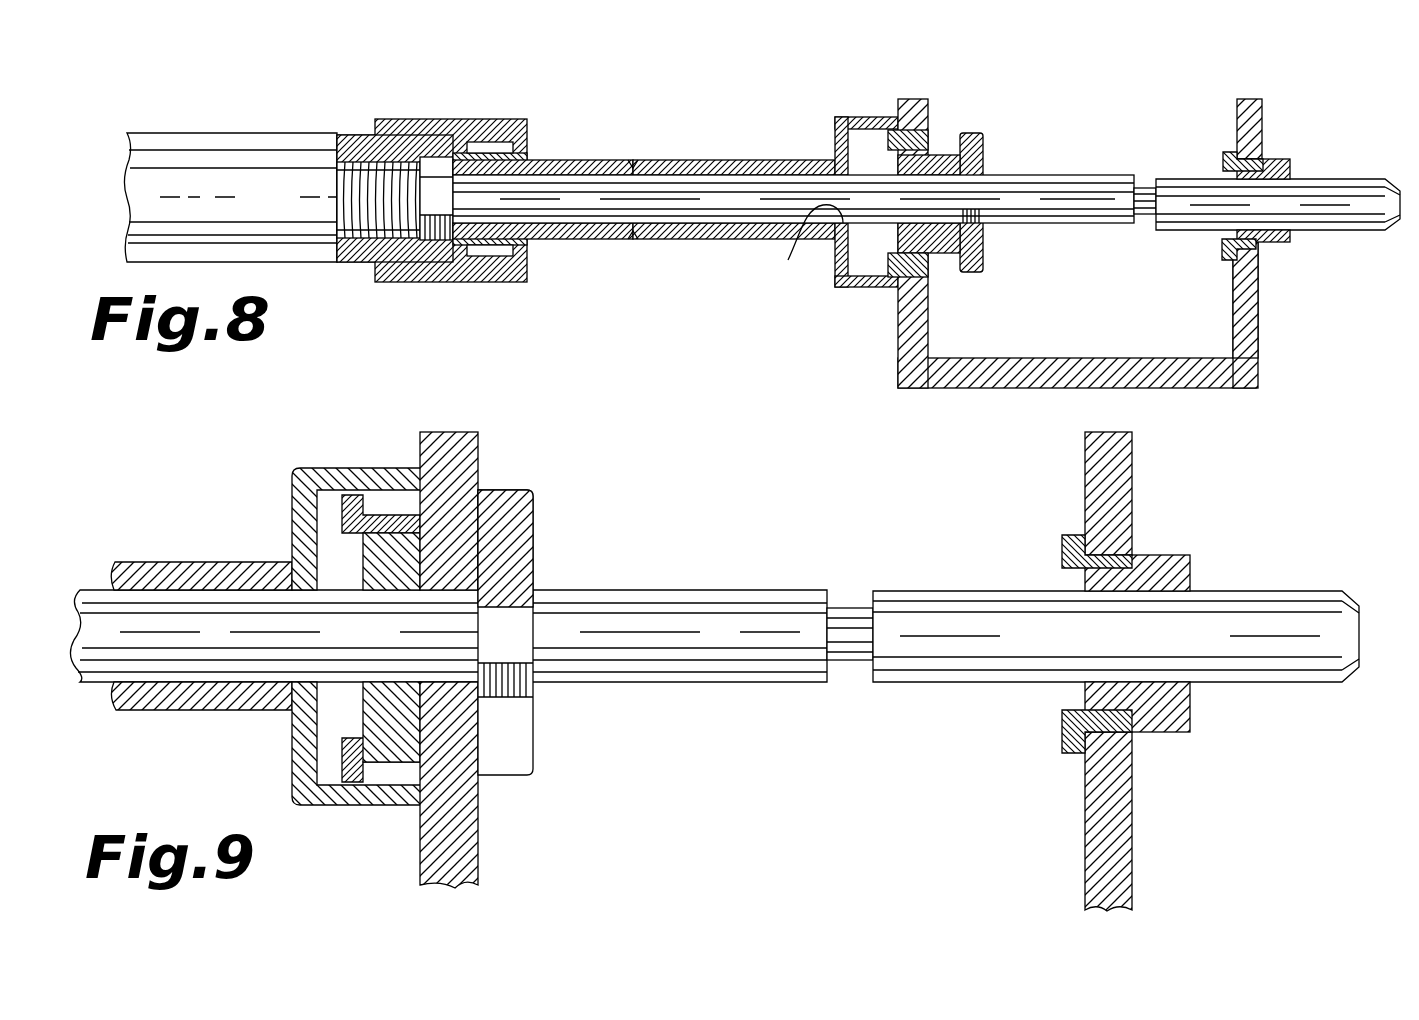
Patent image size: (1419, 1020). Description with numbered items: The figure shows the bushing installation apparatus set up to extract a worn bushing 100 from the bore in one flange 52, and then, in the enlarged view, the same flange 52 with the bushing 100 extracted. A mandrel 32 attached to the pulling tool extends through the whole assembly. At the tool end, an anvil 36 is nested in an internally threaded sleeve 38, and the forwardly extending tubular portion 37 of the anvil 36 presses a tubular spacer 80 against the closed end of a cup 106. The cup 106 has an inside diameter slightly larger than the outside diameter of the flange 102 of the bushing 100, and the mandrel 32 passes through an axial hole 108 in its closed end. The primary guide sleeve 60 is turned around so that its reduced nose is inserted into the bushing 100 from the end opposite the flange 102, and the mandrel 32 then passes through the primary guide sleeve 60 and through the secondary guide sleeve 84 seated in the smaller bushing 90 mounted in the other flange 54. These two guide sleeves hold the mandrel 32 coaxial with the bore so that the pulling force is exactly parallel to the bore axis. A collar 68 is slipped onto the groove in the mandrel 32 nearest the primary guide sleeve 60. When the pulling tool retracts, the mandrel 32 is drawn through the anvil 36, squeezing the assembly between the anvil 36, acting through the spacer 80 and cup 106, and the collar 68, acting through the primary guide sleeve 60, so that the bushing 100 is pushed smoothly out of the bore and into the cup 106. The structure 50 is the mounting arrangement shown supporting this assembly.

In FIG. 8, the mandrel 32 is at (1069, 178).
In FIG. 9, the mandrel 32 is at (656, 590).
In FIG. 8, the anvil 36 is at (562, 145).
In FIG. 8, the tubular portion 37 is at (606, 160).
In FIG. 8, the threaded sleeve 38 is at (433, 118).
In FIG. 8, the bracket 50 is at (949, 404).
In FIG. 8, the flange 52 is at (914, 99).
In FIG. 9, the flange 52 is at (452, 432).
In FIG. 8, the flange 54 is at (1250, 99).
In FIG. 9, the flange 54 is at (1112, 432).
In FIG. 9, the primary guide sleeve 60 is at (446, 518).
In FIG. 9, the collar 68 is at (525, 490).
In FIG. 8, the spacer 80 is at (700, 160).
In FIG. 9, the spacer 80 is at (201, 636).
In FIG. 8, the secondary guide sleeve 84 is at (1295, 169).
In FIG. 9, the secondary guide sleeve 84 is at (1190, 578).
In FIG. 8, the bushing 90 is at (1221, 152).
In FIG. 9, the bushing 90 is at (1073, 535).
In FIG. 8, the bushing 100 is at (870, 262).
In FIG. 9, the bushing 100 is at (372, 495).
In FIG. 8, the flange 102 is at (888, 138).
In FIG. 8, the cup 106 is at (855, 117).
In FIG. 9, the cup 106 is at (308, 468).
In FIG. 8, the axial hole 108 is at (794, 250).